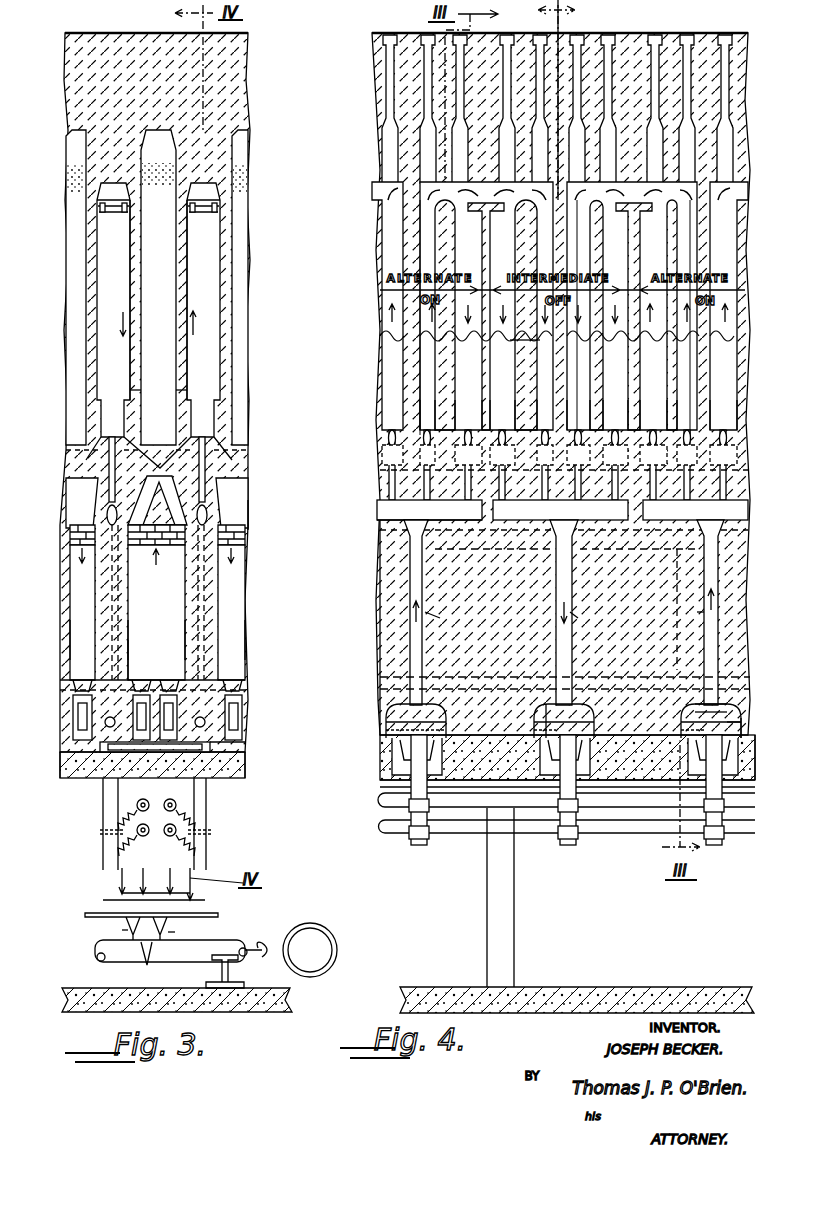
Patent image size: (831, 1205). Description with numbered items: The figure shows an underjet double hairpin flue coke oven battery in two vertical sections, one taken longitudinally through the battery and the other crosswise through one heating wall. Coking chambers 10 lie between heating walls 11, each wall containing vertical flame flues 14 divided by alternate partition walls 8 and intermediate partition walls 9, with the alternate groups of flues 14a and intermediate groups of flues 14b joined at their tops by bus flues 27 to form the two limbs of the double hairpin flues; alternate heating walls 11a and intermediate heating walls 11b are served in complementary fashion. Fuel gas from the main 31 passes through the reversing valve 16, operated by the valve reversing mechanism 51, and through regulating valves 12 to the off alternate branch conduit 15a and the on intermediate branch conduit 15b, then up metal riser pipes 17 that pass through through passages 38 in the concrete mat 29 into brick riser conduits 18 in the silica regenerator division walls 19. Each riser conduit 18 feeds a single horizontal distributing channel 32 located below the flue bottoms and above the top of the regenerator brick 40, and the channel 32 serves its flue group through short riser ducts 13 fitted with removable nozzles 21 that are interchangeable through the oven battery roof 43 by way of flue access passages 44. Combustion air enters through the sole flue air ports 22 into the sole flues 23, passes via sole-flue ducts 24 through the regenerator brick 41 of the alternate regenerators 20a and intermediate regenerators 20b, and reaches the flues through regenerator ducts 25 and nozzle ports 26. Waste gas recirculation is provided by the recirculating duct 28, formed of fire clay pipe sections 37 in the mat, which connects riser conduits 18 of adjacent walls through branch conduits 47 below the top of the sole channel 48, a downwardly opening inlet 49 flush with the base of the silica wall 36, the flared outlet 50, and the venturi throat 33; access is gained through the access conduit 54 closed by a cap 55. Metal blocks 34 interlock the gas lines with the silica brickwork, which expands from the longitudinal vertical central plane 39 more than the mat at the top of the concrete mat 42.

In FIG. 4, the alternate partition wall 8 is at (574, 407).
In FIG. 4, the intermediate partition wall 9 is at (755, 392).
In FIG. 3, the coking chamber 10 is at (70, 275).
In FIG. 3, the heating wall 11 is at (183, 237).
In FIG. 3, the alternate heating wall 11a is at (132, 385).
In FIG. 3, the intermediate heating wall 11b is at (180, 385).
In FIG. 4, the regulating valve 12 is at (386, 730).
In FIG. 3, the riser duct 13 is at (140, 452).
In FIG. 4, the riser duct 13 is at (380, 471).
In FIG. 3, the flame flue 14 is at (158, 310).
In FIG. 4, the flame flue 14 is at (558, 317).
In FIG. 4, the alternate group of flues 14a is at (378, 336).
In FIG. 4, the intermediate group of flues 14b is at (525, 342).
In FIG. 3, the off alternate branch conduit 15a is at (137, 797).
In FIG. 4, the off alternate branch conduit 15a is at (385, 832).
In FIG. 3, the on intermediate branch conduit 15b is at (195, 830).
In FIG. 4, the on intermediate branch conduit 15b is at (385, 795).
In FIG. 3, the reversing valve 16 is at (146, 962).
In FIG. 3, the metal riser pipe 17 is at (202, 802).
In FIG. 4, the metal riser pipe 17 is at (755, 786).
In FIG. 3, the riser conduit 18 is at (70, 610).
In FIG. 4, the riser conduit 18 is at (418, 563).
In FIG. 3, the regenerator division wall 19 is at (183, 630).
In FIG. 4, the regenerator division wall 19 is at (395, 590).
In FIG. 3, the alternate regenerator 20a is at (150, 659).
In FIG. 3, the intermediate regenerator 20b is at (75, 636).
In FIG. 3, the nozzle 21 is at (116, 440).
In FIG. 4, the nozzle 21 is at (388, 432).
In FIG. 3, the sole flue air port 22 is at (245, 698).
In FIG. 3, the sole flue 23 is at (242, 713).
In FIG. 4, the sole flue 23 is at (386, 713).
In FIG. 3, the sole-flue duct 24 is at (82, 680).
In FIG. 4, the sole-flue duct 24 is at (392, 676).
In FIG. 3, the regenerator duct 25 is at (159, 505).
In FIG. 4, the regenerator duct 25 is at (385, 515).
In FIG. 3, the nozzle port 26 is at (66, 465).
In FIG. 4, the nozzle port 26 is at (420, 456).
In FIG. 3, the bus flue 27 is at (98, 197).
In FIG. 4, the bus flue 27 is at (376, 191).
In FIG. 3, the recirculating duct 28 is at (210, 744).
In FIG. 4, the recirculating duct 28 is at (540, 730).
In FIG. 3, the concrete mat 29 is at (62, 784).
In FIG. 4, the concrete mat 29 is at (380, 748).
In FIG. 3, the fuel gas main 31 is at (118, 958).
In FIG. 3, the distributing channel 32 is at (106, 514).
In FIG. 4, the distributing channel 32 is at (383, 526).
In FIG. 4, the venturi throat 33 is at (722, 706).
In FIG. 4, the metal block 34 is at (741, 715).
In FIG. 4, the base of silica wall 36 is at (742, 728).
In FIG. 3, the fire clay pipe section 37 is at (142, 806).
In FIG. 4, the fire clay pipe section 37 is at (500, 808).
In FIG. 3, the through passage 38 is at (62, 765).
In FIG. 4, the through passage 38 is at (752, 759).
In FIG. 4, the longitudinal vertical central plane 39 is at (562, 22).
In FIG. 3, the top of regenerator brick 40 is at (248, 525).
In FIG. 4, the top of regenerator brick 40 is at (748, 528).
In FIG. 3, the regenerator brick 41 is at (245, 548).
In FIG. 4, the top of concrete mat 42 is at (752, 739).
In FIG. 3, the oven battery roof 43 is at (116, 32).
In FIG. 4, the oven battery roof 43 is at (628, 45).
In FIG. 4, the flue access passage 44 is at (460, 90).
In FIG. 3, the branch conduit 47 is at (104, 720).
In FIG. 4, the branch conduit 47 is at (546, 710).
In FIG. 3, the top of sole channel 48 is at (245, 683).
In FIG. 4, the downwardly opening inlet 49 is at (690, 716).
In FIG. 3, the flared outlet 50 is at (100, 748).
In FIG. 4, the flared outlet 50 is at (672, 730).
In FIG. 3, the valve reversing mechanism 51 is at (85, 915).
In FIG. 3, the access conduit 54 is at (245, 750).
In FIG. 3, the cap 55 is at (245, 769).